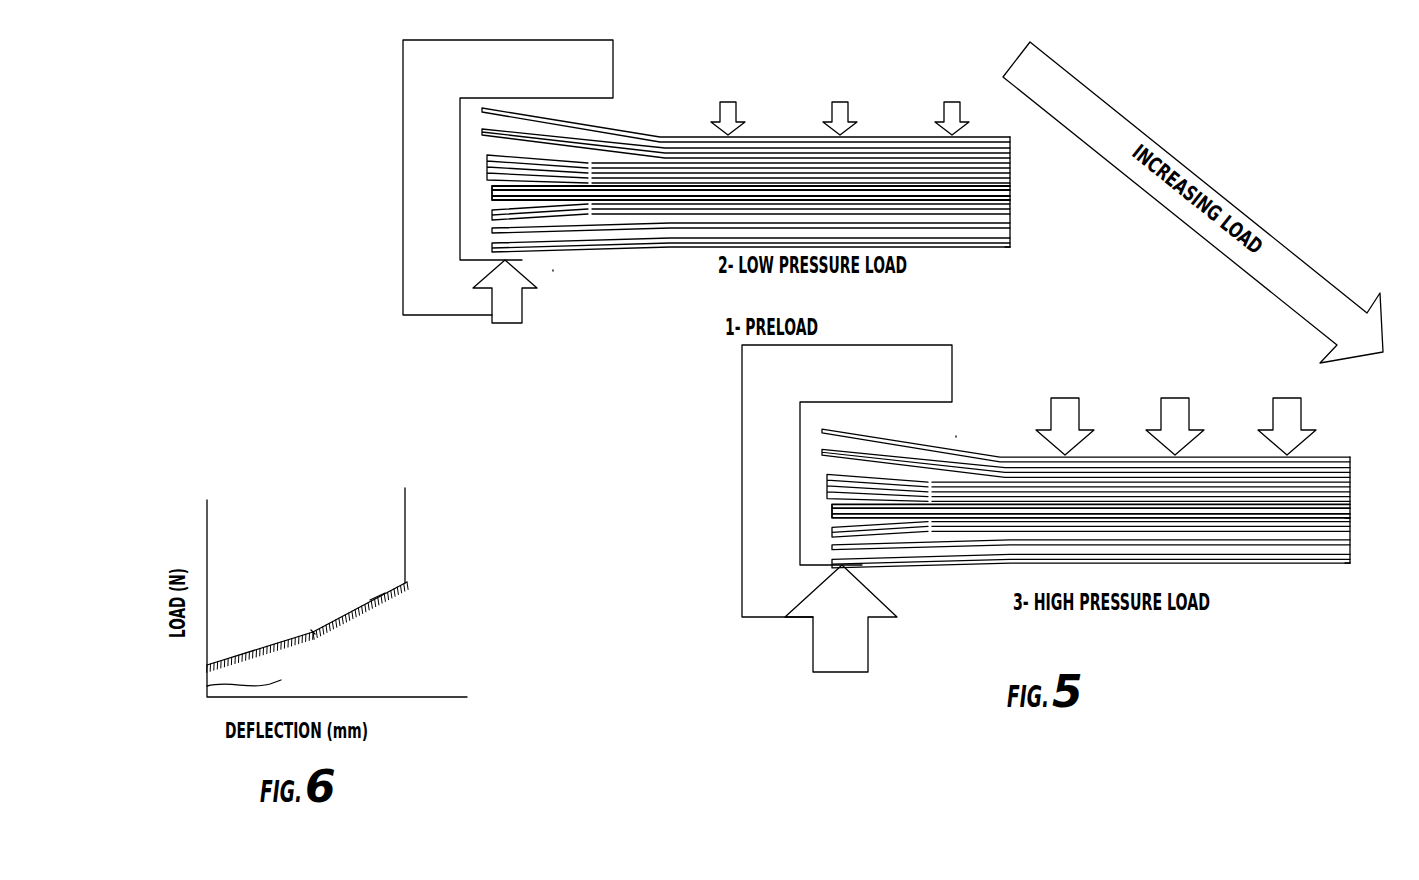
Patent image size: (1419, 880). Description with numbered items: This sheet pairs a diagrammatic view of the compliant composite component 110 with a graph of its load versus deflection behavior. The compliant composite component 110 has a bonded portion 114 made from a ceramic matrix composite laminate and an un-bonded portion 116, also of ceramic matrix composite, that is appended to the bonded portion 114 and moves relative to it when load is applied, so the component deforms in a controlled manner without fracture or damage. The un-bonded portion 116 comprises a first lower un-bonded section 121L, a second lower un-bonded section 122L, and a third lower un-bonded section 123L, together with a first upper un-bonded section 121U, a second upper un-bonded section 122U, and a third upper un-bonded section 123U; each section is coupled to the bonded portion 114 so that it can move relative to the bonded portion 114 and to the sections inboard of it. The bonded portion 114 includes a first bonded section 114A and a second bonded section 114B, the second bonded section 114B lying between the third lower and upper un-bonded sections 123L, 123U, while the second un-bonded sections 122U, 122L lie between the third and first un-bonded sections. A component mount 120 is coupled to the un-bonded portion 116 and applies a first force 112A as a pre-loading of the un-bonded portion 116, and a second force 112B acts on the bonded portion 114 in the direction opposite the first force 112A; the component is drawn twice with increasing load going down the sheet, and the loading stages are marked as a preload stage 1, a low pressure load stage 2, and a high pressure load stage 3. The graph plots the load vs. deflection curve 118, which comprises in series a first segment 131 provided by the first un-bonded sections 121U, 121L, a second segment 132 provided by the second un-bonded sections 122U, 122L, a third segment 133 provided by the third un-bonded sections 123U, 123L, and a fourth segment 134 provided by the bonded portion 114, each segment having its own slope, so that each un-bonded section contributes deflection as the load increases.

In FIG. 5, the compliant composite component 110 is at (1040, 195).
In FIG. 5, the first force 112A is at (498, 323).
In FIG. 5, the second force 112B is at (945, 105).
In FIG. 5, the bonded portion 114 is at (960, 256).
In FIG. 5, the first bonded section 114A is at (1010, 204).
In FIG. 5, the second bonded section 114B is at (492, 190).
In FIG. 5, the un-bonded portion 116 is at (553, 270).
In FIG. 6, the load vs. deflection curve 118 is at (348, 577).
In FIG. 5, the component mount 120 is at (403, 290).
In FIG. 5, the first upper un-bonded section 121U is at (482, 110).
In FIG. 5, the first lower un-bonded section 121L is at (588, 250).
In FIG. 5, the second upper un-bonded section 122U is at (482, 132).
In FIG. 5, the second lower un-bonded section 122L is at (492, 231).
In FIG. 5, the third upper un-bonded section 123U is at (487, 163).
In FIG. 5, the third lower un-bonded section 123L is at (492, 216).
In FIG. 6, the first segment 131 is at (260, 680).
In FIG. 6, the second segment 132 is at (313, 631).
In FIG. 6, the third segment 133 is at (377, 603).
In FIG. 6, the fourth segment 134 is at (405, 510).
In FIG. 6, the preload stage 1 is at (185, 687).
In FIG. 6, the low pressure load stage 2 is at (260, 639).
In FIG. 6, the high pressure load stage 3 is at (360, 603).